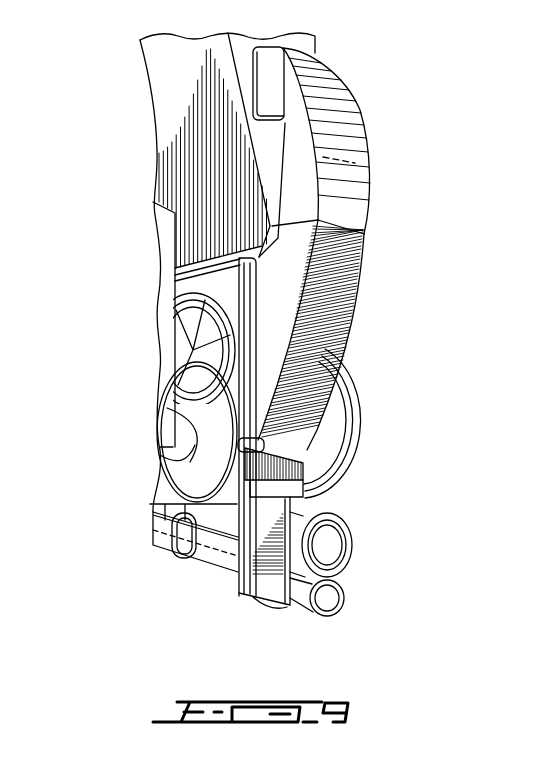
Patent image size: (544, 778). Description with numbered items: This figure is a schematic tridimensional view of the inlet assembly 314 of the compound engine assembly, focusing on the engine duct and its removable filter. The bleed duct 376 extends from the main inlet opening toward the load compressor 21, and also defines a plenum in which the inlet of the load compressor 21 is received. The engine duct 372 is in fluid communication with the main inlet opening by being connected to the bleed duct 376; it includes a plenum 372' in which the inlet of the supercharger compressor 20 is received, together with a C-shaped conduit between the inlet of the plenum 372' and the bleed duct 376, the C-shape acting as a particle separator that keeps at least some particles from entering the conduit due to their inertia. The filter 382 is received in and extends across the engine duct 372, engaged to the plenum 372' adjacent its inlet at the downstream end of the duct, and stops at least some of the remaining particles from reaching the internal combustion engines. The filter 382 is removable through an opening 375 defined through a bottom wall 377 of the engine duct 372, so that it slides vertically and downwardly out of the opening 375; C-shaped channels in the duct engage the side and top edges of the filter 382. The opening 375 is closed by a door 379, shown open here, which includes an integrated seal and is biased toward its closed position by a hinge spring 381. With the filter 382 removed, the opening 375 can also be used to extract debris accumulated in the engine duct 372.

The inlet assembly 314 is at (400, 52).
The bleed duct 376 is at (162, 132).
The engine duct 372 is at (363, 152).
The plenum 372' is at (179, 259).
The supercharger compressor 20 is at (192, 349).
The opening 375 is at (238, 457).
The load compressor 21 is at (365, 426).
The hinge spring 381 is at (303, 456).
The door 379 is at (300, 483).
The filter 382 is at (270, 583).
The bottom wall 377 is at (228, 498).